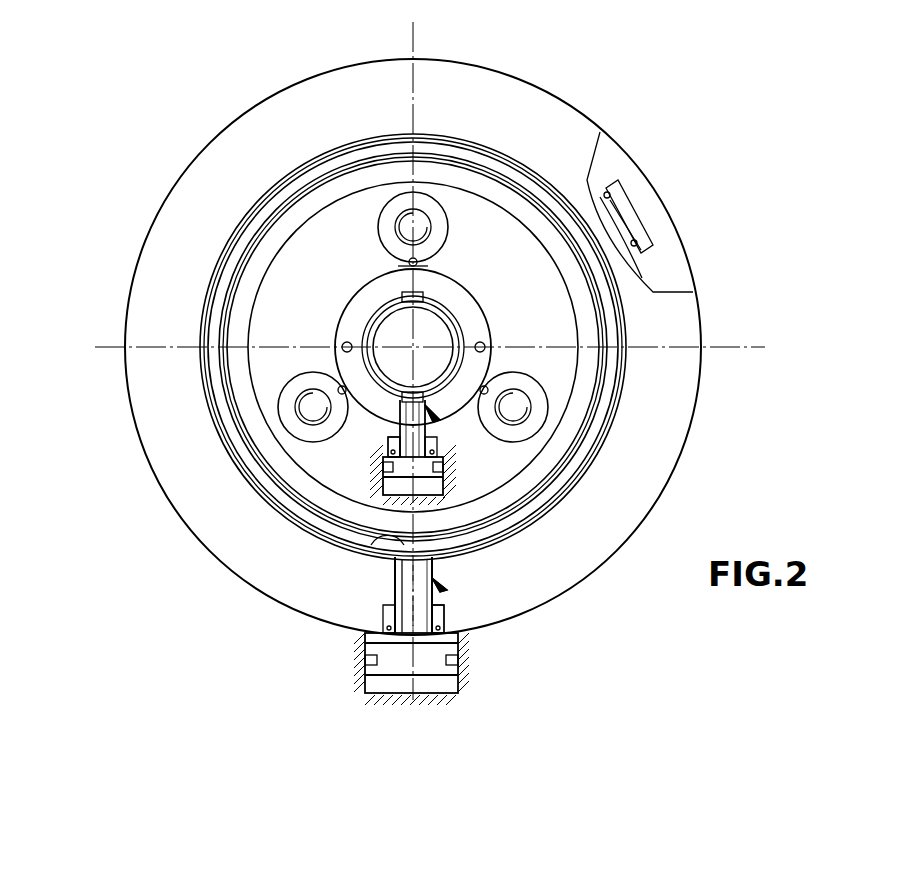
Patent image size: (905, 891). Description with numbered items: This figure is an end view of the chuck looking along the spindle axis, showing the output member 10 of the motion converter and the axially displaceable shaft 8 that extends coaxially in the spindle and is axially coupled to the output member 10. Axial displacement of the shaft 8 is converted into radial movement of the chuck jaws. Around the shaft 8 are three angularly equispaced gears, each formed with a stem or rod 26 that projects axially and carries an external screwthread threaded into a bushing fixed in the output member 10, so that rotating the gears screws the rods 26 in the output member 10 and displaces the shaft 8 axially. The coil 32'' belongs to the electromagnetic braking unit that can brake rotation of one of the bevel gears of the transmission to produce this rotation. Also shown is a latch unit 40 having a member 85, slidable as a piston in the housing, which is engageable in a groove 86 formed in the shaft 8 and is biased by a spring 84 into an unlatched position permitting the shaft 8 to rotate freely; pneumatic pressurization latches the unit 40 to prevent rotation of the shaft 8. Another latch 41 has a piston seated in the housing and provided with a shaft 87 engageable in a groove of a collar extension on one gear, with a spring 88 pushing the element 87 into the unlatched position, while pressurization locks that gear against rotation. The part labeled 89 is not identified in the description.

The output member 10 is at (558, 320).
The coil 32'' is at (632, 167).
The shaft 8 is at (452, 322).
The stem or rod 26 is at (421, 220).
The groove 86 is at (408, 398).
The spring 84 is at (386, 454).
The latch unit 40 is at (432, 422).
The dome boss 89 is at (363, 548).
The latch 41 is at (440, 584).
The shaft 87 is at (397, 583).
The spring 88 is at (460, 636).
The member 85 is at (462, 507).